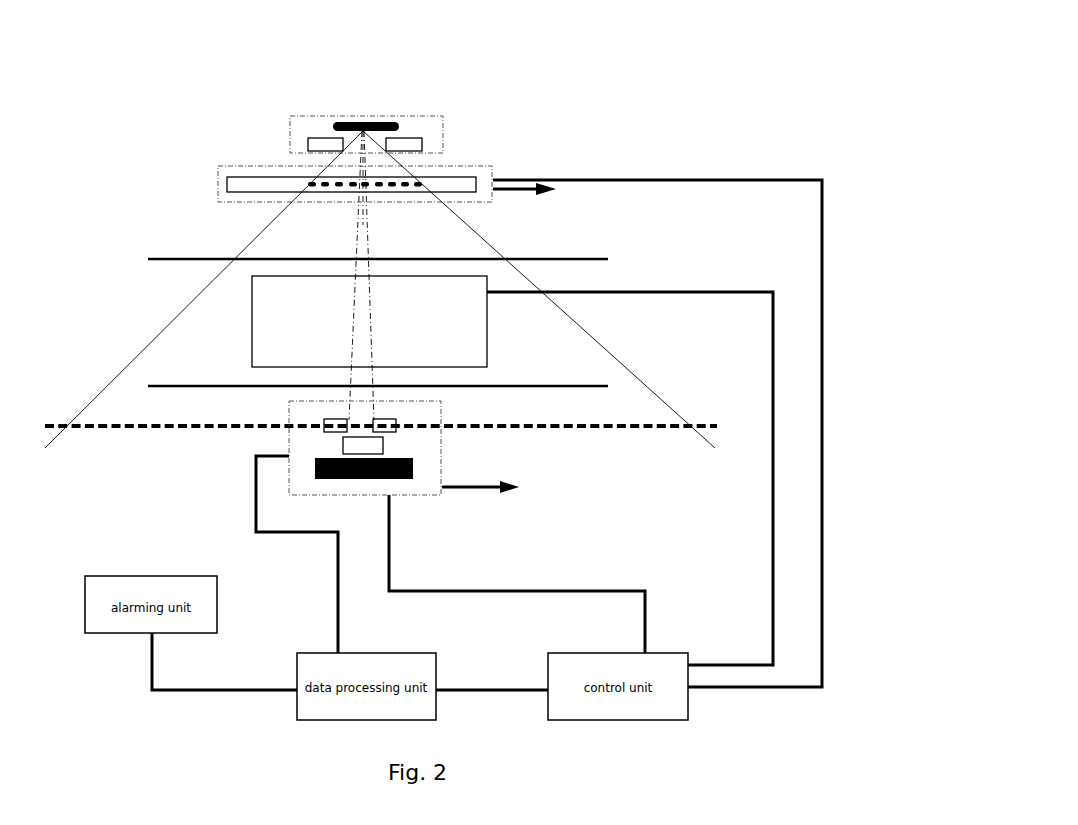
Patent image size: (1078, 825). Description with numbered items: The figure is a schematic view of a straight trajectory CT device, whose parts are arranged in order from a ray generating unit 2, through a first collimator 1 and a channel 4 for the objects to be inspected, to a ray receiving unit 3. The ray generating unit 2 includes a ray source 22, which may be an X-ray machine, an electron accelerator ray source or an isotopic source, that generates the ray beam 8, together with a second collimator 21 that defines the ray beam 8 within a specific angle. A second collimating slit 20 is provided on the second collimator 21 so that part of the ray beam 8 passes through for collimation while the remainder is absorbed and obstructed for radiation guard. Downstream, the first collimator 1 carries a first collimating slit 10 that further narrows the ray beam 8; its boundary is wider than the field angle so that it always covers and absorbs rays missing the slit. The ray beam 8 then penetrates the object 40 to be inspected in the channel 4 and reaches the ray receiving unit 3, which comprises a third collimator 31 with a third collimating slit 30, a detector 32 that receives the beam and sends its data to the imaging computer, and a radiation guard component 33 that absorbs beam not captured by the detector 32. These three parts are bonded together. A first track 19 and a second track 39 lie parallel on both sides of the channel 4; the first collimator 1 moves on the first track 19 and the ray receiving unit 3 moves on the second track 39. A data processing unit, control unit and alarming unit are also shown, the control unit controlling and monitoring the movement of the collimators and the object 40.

The first collimator 1 is at (492, 178).
The ray generating unit 2 is at (300, 130).
The second collimating slit 20 is at (355, 125).
The second collimator 21 is at (390, 142).
The ray source 22 is at (350, 122).
The first track 19 is at (310, 182).
The first collimating slit 10 is at (363, 186).
The object to be inspected 40 is at (412, 315).
The channel for the objects to be inspected 4 is at (530, 330).
The ray beam 8 is at (362, 271).
The second track 39 is at (563, 424).
The third collimating slit 30 is at (350, 420).
The third collimator 31 is at (350, 420).
The detector 32 is at (383, 446).
The radiation guard component 33 is at (385, 479).
The ray receiving unit 3 is at (303, 488).